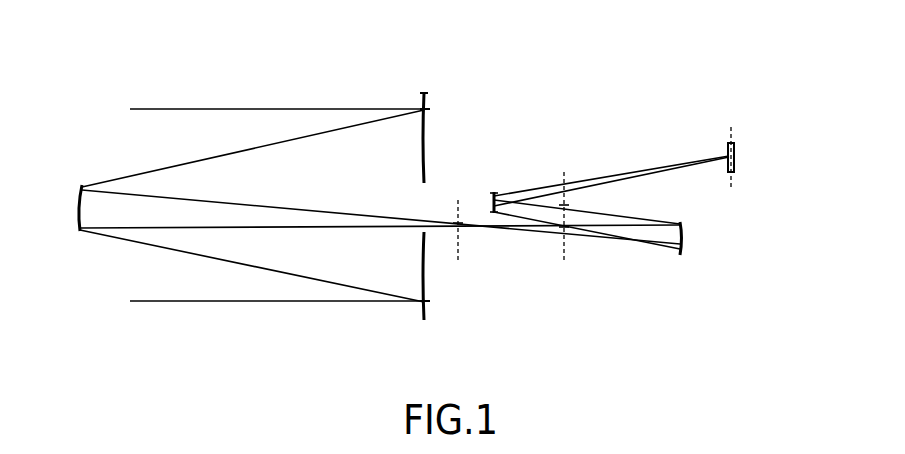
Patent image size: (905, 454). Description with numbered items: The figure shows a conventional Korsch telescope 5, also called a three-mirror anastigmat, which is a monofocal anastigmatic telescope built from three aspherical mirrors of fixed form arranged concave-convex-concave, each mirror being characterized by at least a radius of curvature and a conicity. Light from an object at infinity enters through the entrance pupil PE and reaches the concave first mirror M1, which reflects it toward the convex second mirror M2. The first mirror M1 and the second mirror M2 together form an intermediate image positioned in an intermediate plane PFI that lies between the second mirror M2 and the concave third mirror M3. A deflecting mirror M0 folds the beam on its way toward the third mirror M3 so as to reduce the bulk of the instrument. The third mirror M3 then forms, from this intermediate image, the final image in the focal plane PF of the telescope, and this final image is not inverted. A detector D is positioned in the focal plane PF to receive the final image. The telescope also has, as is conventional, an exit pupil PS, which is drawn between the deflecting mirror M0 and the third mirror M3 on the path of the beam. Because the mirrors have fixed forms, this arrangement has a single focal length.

The optical system 5 is at (342, 100).
The second mirror M2 is at (80, 208).
The first mirror M1 is at (428, 142).
The deflecting mirror M0 is at (489, 202).
The third mirror M3 is at (683, 232).
The entrance pupil PE is at (426, 95).
The intermediate plane PFI is at (458, 240).
The exit pupil PS is at (573, 203).
The focal plane PF is at (731, 127).
The detector D is at (735, 150).